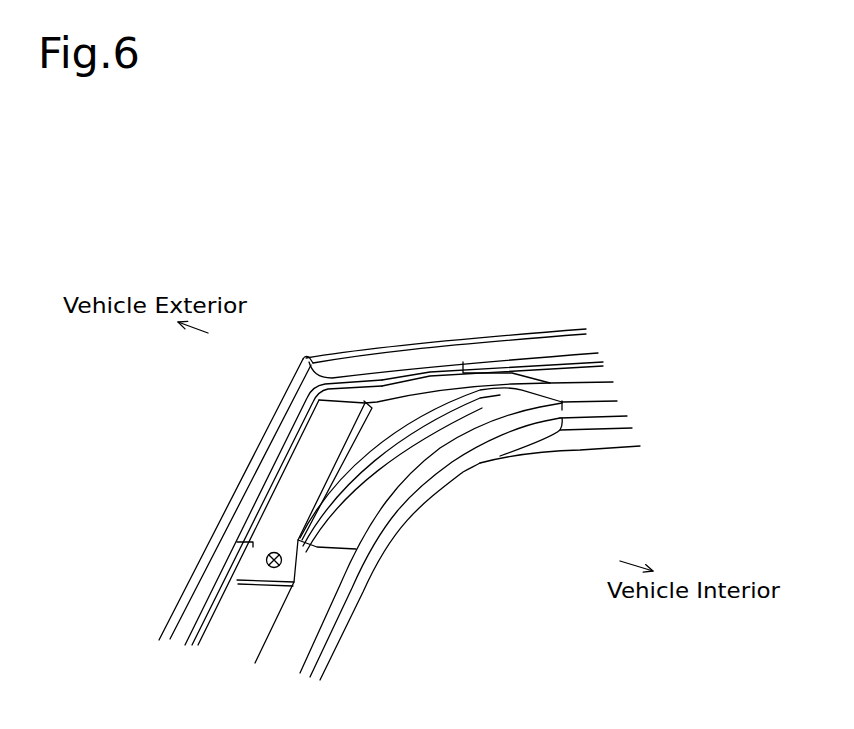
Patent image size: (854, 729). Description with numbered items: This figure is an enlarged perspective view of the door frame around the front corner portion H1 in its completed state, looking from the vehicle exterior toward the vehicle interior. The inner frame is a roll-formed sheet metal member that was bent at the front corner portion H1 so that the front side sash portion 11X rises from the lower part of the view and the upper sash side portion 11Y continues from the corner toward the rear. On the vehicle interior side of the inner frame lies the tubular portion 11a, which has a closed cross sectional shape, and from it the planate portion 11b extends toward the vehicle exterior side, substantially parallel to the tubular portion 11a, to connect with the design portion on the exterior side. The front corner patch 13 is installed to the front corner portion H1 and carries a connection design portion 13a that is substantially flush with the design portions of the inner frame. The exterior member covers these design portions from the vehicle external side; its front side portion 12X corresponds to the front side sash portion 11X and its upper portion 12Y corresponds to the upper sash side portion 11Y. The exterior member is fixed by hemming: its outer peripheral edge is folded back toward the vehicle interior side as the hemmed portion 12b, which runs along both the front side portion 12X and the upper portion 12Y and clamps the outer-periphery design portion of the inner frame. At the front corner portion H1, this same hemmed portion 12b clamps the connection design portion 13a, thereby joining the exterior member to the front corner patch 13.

The tubular portion 11a is at (363, 517).
The planate portion 11b is at (240, 630).
The front side sash portion 11X is at (342, 666).
The upper sash side portion 11Y is at (633, 455).
The hemmed portion 12b is at (270, 455).
The front side portion 12X is at (218, 502).
The upper portion 12Y is at (536, 327).
The front corner patch 13 is at (390, 392).
The connection design portion 13a is at (305, 356).
The front corner portion H1 is at (467, 485).